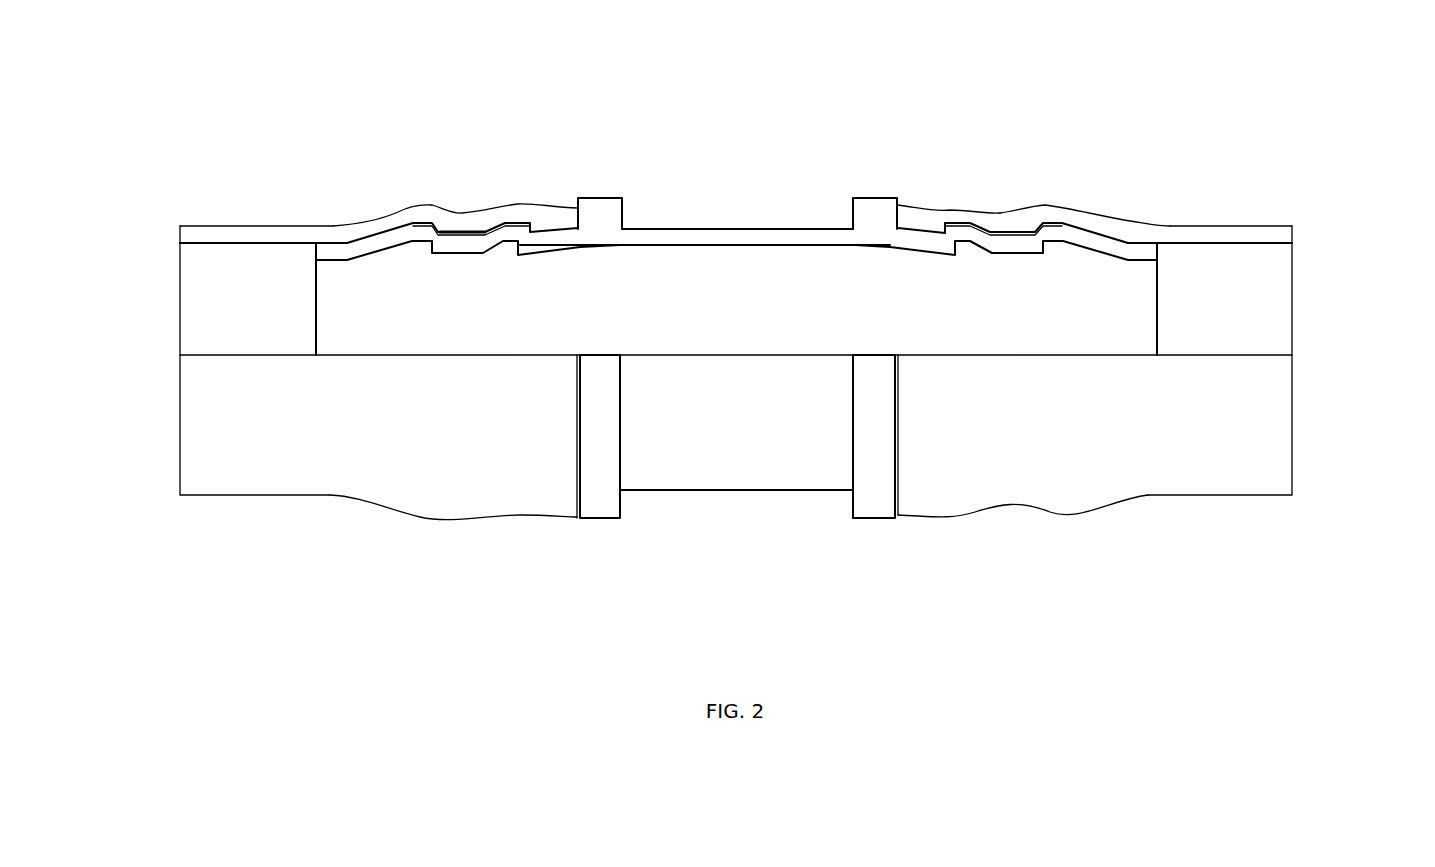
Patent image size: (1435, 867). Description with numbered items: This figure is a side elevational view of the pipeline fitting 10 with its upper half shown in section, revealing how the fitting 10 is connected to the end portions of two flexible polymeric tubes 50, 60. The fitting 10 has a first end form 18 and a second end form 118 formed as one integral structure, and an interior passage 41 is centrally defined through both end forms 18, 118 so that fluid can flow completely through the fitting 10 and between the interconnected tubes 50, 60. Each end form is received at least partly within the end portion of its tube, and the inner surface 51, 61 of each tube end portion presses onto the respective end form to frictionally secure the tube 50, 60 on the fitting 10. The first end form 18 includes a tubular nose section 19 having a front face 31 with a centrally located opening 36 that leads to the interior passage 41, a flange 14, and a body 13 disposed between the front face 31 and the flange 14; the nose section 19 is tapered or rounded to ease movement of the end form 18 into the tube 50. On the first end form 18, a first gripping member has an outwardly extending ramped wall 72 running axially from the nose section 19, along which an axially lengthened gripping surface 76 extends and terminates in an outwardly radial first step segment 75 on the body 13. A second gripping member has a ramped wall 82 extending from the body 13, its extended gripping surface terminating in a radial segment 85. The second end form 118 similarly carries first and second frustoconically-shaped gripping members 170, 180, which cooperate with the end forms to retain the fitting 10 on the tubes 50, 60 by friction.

The pipeline fitting 10 is at (699, 575).
The body 13 is at (457, 222).
The flange 14 is at (588, 197).
The first end form 18 is at (496, 73).
The tubular nose section 19 is at (312, 222).
The front face 31 is at (268, 228).
The centrally located opening 36 is at (316, 312).
The interior passage 41 is at (745, 283).
The flexible polymeric tube 50 is at (238, 222).
The inner surface 51 is at (207, 244).
The flexible polymeric tube 60 is at (1199, 224).
The inner surface 61 is at (1258, 244).
The ramped wall 72 is at (427, 222).
The first step segment 75 is at (442, 222).
The gripping surface 76 is at (392, 222).
The ramped wall 82 is at (483, 222).
The radial segment 85 is at (542, 222).
The second end form 118 is at (1055, 122).
The first gripping member 170 is at (1061, 205).
The second gripping member 180 is at (961, 205).